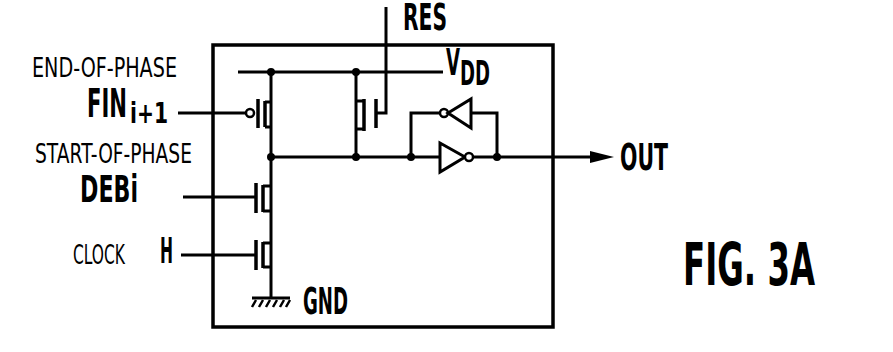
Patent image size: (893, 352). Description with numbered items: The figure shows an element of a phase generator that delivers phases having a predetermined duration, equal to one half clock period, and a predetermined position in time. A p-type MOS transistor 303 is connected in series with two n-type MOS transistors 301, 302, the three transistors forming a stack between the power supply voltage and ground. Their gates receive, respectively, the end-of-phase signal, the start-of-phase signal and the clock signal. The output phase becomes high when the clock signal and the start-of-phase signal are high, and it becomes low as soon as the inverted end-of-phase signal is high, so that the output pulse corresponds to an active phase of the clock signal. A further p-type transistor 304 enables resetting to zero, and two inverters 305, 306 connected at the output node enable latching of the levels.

The n-type MOS transistor 301 is at (276, 254).
The n-type MOS transistor 302 is at (276, 196).
The p-type MOS transistor 303 is at (275, 116).
The further p-type transistor 304 is at (373, 146).
The inverter 305 is at (474, 103).
The inverter 306 is at (457, 172).